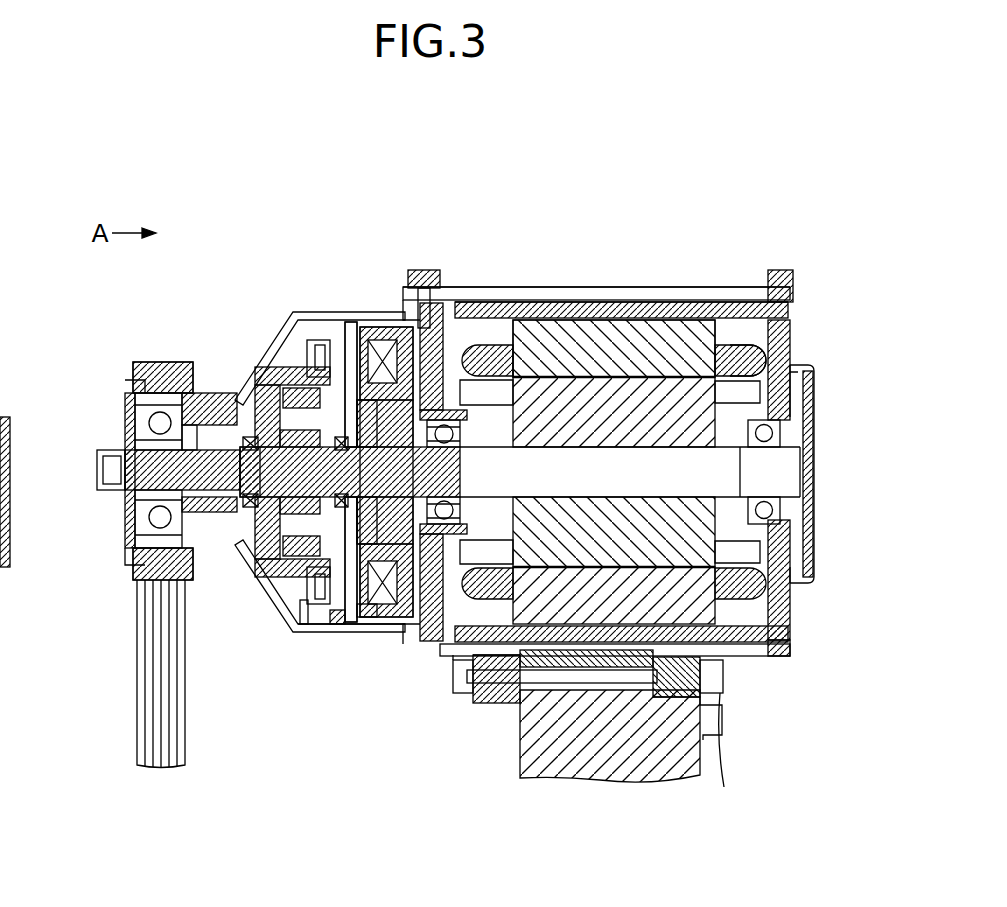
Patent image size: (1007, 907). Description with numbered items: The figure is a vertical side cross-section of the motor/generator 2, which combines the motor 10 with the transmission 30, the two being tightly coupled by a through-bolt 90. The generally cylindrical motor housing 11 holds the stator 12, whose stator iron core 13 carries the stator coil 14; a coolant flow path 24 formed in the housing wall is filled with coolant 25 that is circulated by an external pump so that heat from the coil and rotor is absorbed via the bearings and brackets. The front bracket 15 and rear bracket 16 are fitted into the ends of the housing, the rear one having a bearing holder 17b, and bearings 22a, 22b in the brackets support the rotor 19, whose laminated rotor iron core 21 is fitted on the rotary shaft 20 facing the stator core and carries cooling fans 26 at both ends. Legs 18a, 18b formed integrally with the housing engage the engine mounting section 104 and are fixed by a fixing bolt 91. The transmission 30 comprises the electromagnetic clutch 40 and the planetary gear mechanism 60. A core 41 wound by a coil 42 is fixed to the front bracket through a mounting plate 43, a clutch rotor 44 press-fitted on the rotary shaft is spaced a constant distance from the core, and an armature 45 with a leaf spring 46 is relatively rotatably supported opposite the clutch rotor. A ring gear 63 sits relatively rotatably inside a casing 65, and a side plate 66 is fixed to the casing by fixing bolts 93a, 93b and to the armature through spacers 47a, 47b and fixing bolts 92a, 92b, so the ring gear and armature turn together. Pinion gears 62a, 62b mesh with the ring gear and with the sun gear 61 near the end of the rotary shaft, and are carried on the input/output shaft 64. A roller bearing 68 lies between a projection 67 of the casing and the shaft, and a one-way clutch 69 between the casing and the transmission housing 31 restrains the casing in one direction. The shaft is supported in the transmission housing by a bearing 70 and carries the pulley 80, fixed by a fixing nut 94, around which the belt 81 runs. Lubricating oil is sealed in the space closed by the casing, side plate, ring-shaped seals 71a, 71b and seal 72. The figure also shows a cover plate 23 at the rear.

The motor/generator 2 is at (512, 290).
The motor 10 is at (601, 290).
The motor housing 11 is at (578, 310).
The stator 12 is at (726, 330).
The stator iron core 13 is at (556, 320).
The stator coil 14 is at (488, 300).
The front bracket 15 is at (431, 300).
The rear bracket 16 is at (793, 313).
The bearing holder 17b is at (793, 417).
The leg 18a is at (502, 707).
The leg 18b is at (707, 707).
The rotor 19 is at (770, 590).
The rotary shaft 20 is at (745, 525).
The rotor iron core 21 is at (723, 680).
The bearing 22a is at (438, 600).
The bearing 22b is at (800, 452).
The cover plate 23 is at (810, 497).
The coolant flow path 24 is at (660, 320).
The coolant 25 is at (702, 300).
The cooling fan 26 is at (750, 360).
The transmission 30 is at (340, 340).
The transmission housing 31 is at (222, 400).
The electromagnetic clutch 40 is at (345, 350).
The core 41 is at (392, 330).
The coil 42 is at (372, 327).
The mounting plate 43 is at (418, 270).
The clutch rotor 44 is at (356, 330).
The armature 45 is at (315, 340).
The leaf spring 46 is at (328, 340).
The spacer 47a is at (340, 345).
The spacer 47b is at (345, 600).
The planetary gear mechanism 60 is at (140, 360).
The sun gear 61 is at (260, 548).
The pinion gear 62a is at (237, 380).
The pinion gear 62b is at (273, 570).
The ring gear 63 is at (262, 600).
The input/output shaft 64 is at (130, 545).
The casing 65 is at (283, 595).
The side plate 66 is at (315, 640).
The projection 67 is at (127, 402).
The roller bearing 68 is at (160, 437).
The one-way clutch 69 is at (135, 415).
The bearing 70 is at (130, 517).
The ring-shaped seal 71a is at (140, 395).
The ring-shaped seal 71b is at (365, 605).
The seal 72 is at (310, 610).
The pulley 80 is at (137, 513).
The belt 81 is at (137, 700).
The through-bolt 90 is at (626, 300).
The fixing bolt 91 is at (460, 700).
The fixing bolt 92a is at (300, 390).
The fixing bolt 92b is at (300, 635).
The fixing bolt 93a is at (245, 395).
The fixing bolt 93b is at (357, 620).
The fixing nut 94 is at (100, 462).
The mounting section 104 is at (600, 783).